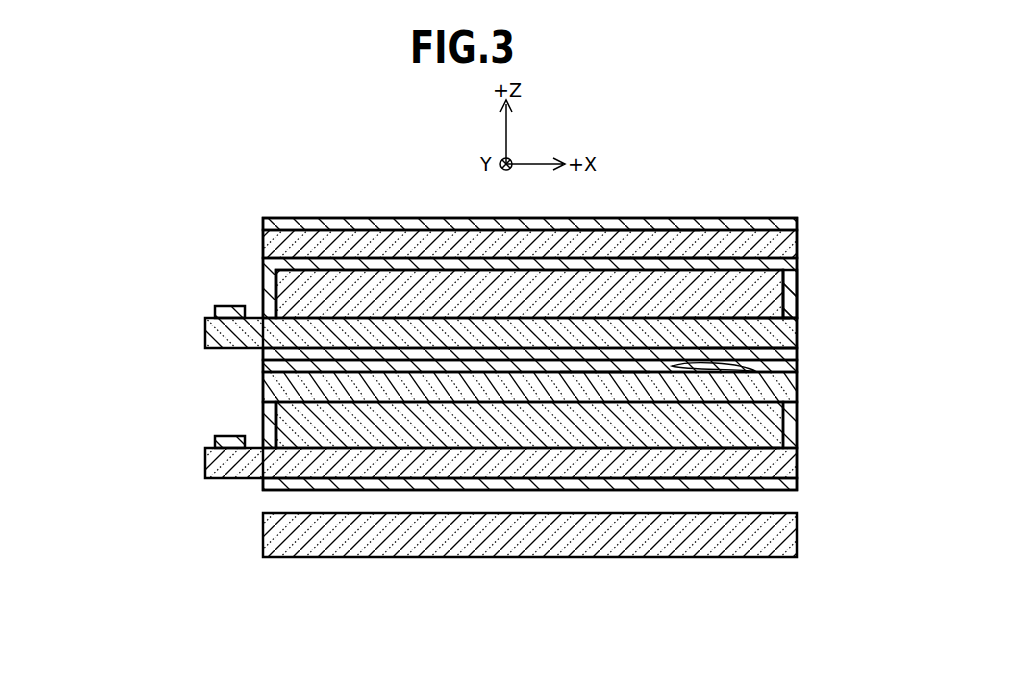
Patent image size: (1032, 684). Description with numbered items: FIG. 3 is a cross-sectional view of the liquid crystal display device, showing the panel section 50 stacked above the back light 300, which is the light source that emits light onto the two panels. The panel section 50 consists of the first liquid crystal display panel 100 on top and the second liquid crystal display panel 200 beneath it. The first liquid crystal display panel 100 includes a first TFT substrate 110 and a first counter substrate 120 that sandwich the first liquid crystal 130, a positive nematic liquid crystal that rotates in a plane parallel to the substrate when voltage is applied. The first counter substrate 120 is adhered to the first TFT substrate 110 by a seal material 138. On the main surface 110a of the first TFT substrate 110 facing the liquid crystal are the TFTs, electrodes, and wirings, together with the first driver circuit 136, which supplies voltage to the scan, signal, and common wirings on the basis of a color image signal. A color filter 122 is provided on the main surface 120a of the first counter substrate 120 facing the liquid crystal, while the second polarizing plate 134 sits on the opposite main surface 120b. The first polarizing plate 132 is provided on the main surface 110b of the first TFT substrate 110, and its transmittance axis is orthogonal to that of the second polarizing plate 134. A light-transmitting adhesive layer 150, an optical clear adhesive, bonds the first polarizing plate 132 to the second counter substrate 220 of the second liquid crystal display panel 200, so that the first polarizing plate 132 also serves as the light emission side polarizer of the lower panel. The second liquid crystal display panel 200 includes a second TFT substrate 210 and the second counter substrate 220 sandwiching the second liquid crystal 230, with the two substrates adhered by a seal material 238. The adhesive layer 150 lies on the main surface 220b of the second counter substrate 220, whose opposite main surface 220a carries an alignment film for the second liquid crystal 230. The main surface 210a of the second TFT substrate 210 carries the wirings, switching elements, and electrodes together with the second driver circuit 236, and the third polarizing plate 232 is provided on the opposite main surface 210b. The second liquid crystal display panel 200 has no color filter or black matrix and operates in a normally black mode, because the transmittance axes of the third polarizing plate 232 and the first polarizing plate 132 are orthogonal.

The panel section 50 is at (804, 200).
The first liquid crystal display panel 100 is at (475, 270).
The first TFT substrate 110 is at (206, 332).
The main surface of first TFT substrate 110a is at (736, 318).
The main surface of first TFT substrate 110b is at (783, 347).
The first counter substrate 120 is at (263, 245).
The main surface of first counter substrate 120a is at (681, 258).
The main surface of first counter substrate 120b is at (628, 228).
The color filter 122 is at (797, 271).
The first liquid crystal 130 is at (286, 283).
The first polarizing plate 132 is at (467, 355).
The second polarizing plate 134 is at (263, 222).
The first driver circuit 136 is at (216, 310).
The seal material 138 is at (797, 300).
The adhesive layer 150 is at (797, 364).
The second liquid crystal display panel 200 is at (474, 484).
The second TFT substrate 210 is at (206, 462).
The main surface of second TFT substrate 210a is at (730, 452).
The main surface of second TFT substrate 210b is at (670, 470).
The second counter substrate 220 is at (263, 388).
The main surface of second counter substrate 220a is at (604, 386).
The main surface of second counter substrate 220b is at (757, 372).
The second liquid crystal 230 is at (286, 406).
The third polarizing plate 232 is at (263, 486).
The second driver circuit 236 is at (216, 440).
The seal material 238 is at (797, 440).
The back light 300 is at (263, 538).